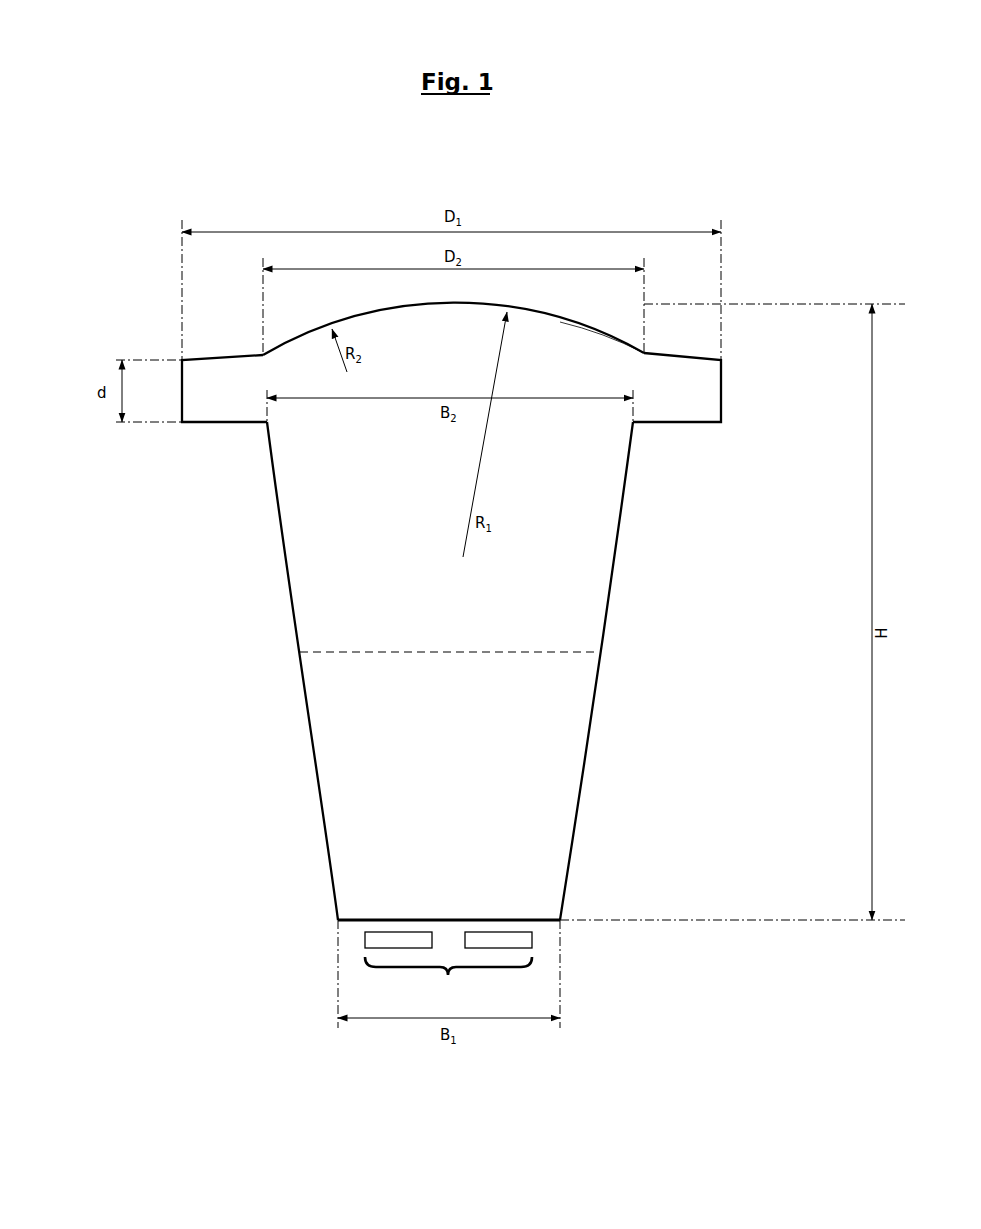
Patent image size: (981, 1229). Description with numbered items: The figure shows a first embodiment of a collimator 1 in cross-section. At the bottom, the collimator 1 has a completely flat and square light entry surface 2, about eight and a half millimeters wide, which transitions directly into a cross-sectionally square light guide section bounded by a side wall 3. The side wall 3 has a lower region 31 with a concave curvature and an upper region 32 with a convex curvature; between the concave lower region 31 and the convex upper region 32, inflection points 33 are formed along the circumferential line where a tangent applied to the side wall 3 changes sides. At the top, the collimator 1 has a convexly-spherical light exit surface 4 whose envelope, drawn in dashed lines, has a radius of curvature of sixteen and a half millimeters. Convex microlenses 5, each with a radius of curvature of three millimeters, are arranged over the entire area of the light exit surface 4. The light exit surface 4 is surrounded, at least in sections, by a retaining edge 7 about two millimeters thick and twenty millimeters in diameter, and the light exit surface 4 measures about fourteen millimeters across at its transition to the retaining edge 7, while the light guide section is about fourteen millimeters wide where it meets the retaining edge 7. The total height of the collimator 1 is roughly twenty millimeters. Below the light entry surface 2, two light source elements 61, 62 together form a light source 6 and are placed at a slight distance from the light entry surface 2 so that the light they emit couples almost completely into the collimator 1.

The collimator 1 is at (150, 226).
The light entry surface 2 is at (517, 920).
The side wall 3 is at (288, 600).
The lower region 31 is at (528, 775).
The upper region 32 is at (597, 530).
The inflection points 33 is at (572, 652).
The light exit surface 4 is at (391, 309).
The microlenses 5 is at (563, 322).
The light source 6 is at (412, 966).
The light source element 61 is at (370, 940).
The light source element 62 is at (530, 937).
The retaining edge 7 is at (687, 408).